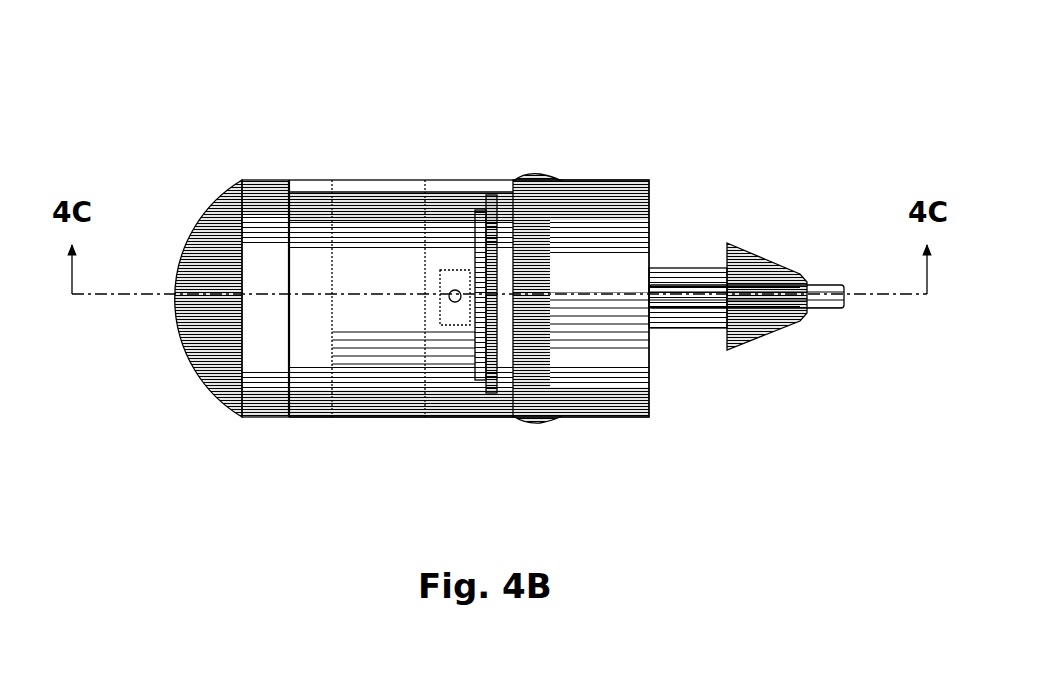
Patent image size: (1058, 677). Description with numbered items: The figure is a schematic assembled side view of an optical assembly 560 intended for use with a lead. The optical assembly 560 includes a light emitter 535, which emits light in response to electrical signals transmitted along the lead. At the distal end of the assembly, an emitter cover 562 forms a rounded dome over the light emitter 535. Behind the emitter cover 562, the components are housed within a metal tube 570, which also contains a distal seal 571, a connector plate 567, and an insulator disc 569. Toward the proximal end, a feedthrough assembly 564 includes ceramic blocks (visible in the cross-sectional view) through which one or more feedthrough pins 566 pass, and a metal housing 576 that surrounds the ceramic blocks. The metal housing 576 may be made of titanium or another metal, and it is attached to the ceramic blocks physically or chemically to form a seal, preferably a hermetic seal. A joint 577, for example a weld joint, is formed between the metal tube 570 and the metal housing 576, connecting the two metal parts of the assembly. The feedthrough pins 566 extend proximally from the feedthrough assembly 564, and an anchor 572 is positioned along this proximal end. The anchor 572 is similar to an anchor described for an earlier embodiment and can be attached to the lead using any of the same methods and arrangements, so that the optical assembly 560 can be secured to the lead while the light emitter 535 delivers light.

The optical assembly 560 is at (132, 74).
The emitter cover 562 is at (189, 210).
The feedthrough assembly 564 is at (672, 187).
The feedthrough pins 566 is at (716, 316).
The connector plate 567 is at (470, 232).
The insulator disc 569 is at (492, 205).
The metal tube 570 is at (421, 418).
The distal seal 571 is at (390, 215).
The anchor 572 is at (750, 236).
The metal housing 576 is at (587, 398).
The joint 577 is at (543, 172).
The light emitter 535 is at (450, 313).